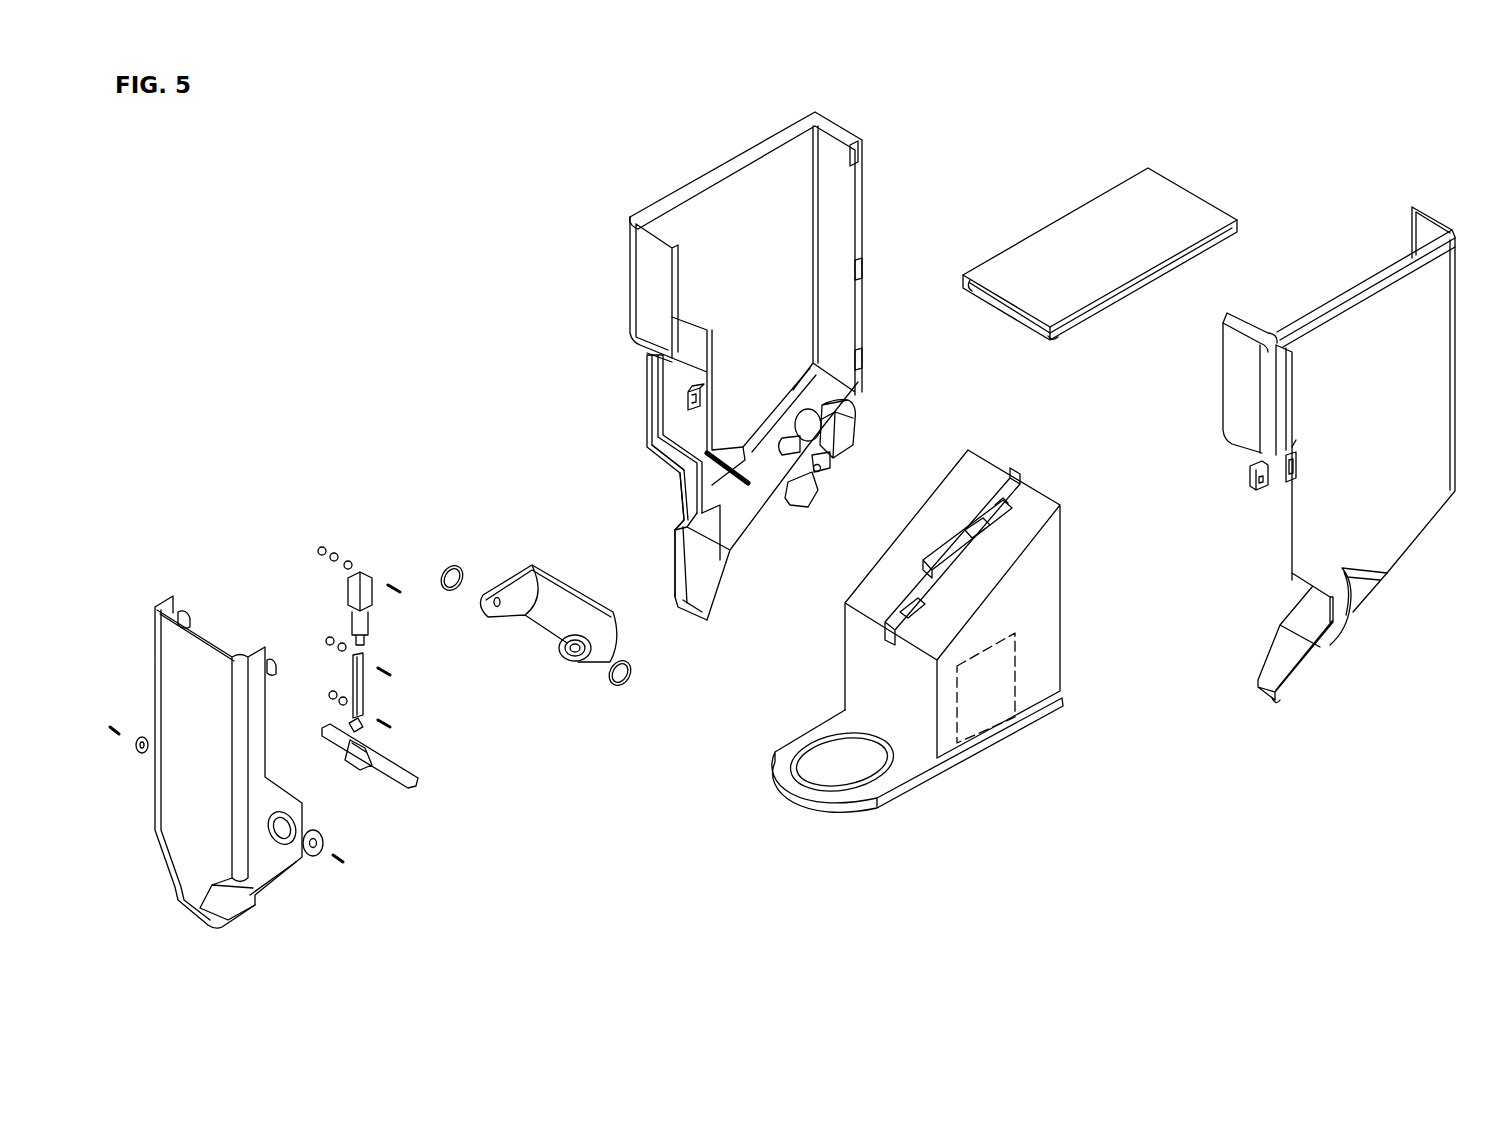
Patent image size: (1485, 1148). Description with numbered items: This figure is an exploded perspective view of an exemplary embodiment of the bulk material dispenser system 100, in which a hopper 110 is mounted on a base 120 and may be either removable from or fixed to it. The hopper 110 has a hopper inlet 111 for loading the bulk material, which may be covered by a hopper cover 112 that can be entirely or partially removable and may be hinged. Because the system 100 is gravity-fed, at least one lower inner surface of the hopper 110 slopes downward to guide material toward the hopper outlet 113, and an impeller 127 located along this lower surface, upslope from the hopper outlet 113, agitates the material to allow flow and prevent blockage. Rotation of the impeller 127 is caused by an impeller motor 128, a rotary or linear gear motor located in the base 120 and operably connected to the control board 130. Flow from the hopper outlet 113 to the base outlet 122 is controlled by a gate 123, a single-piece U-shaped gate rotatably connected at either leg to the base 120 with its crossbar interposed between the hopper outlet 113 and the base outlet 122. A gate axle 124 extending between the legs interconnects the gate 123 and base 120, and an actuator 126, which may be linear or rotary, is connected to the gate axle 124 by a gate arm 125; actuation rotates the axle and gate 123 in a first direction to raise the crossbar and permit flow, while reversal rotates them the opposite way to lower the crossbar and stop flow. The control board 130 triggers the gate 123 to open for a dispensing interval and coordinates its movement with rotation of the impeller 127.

The system 100 is at (352, 314).
The hopper 110 is at (646, 284).
The hopper inlet 111 is at (1330, 263).
The hopper cover 112 is at (1073, 234).
The hopper outlet 113 is at (680, 489).
The base 120 is at (1037, 675).
The base outlet 122 is at (250, 912).
The gate 123 is at (553, 600).
The gate axle 124 is at (400, 762).
The gate arm 125 is at (368, 687).
The actuator 126 is at (368, 582).
The impeller 127 is at (800, 425).
The impeller motor 128 is at (805, 493).
The control board 130 is at (990, 695).